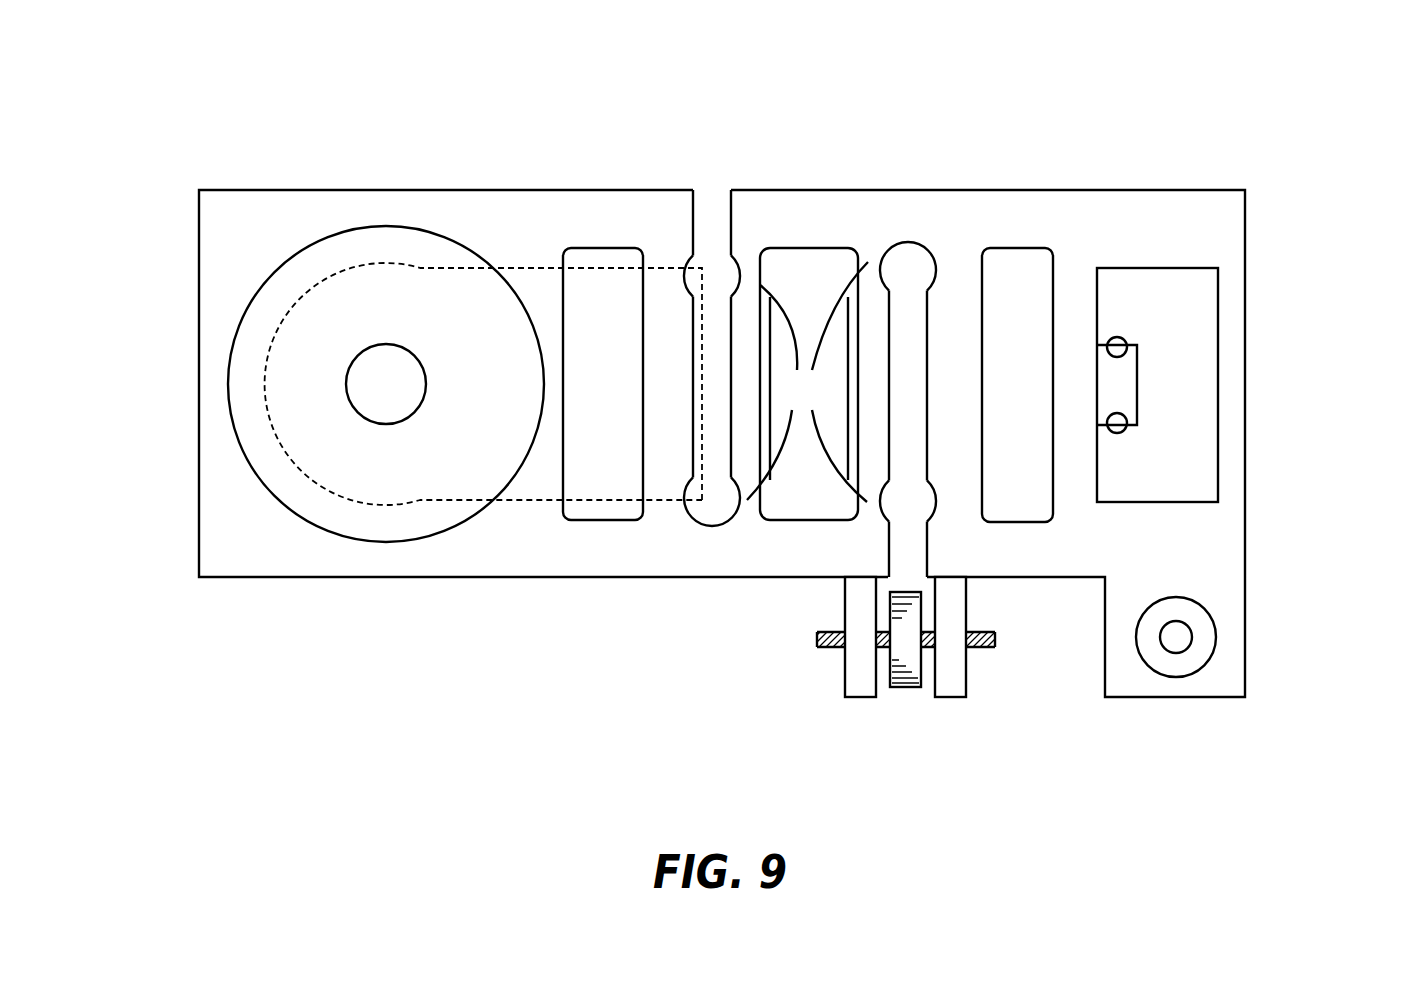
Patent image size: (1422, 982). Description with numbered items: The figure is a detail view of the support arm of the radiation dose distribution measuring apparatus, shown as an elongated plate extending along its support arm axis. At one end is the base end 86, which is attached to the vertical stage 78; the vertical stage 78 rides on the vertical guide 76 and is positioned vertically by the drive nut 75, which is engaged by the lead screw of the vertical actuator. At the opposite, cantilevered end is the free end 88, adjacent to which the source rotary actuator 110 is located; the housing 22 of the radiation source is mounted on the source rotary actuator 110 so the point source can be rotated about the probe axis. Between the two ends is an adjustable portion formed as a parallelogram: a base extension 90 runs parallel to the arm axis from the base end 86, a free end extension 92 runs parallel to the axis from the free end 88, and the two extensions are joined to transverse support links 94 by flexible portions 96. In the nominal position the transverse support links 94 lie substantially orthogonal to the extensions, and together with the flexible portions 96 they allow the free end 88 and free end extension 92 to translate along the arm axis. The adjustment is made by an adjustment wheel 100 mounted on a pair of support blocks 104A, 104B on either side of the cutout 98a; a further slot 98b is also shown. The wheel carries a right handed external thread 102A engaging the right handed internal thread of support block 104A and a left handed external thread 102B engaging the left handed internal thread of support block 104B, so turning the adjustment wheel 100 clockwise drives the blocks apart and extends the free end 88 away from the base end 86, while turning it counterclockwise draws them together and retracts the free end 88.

The housing 22 is at (525, 272).
The drive nut 75 is at (1207, 632).
The vertical guide 76 is at (1115, 393).
The vertical stage 78 is at (1190, 375).
The base end 86 is at (1283, 212).
The free end 88 is at (183, 266).
The base extension 90 is at (813, 228).
The free end extension 92 is at (793, 538).
The transverse support links 94 is at (749, 337).
The flexible portions 96 is at (807, 382).
The cutout 98a is at (907, 402).
The guide slot 98b is at (712, 445).
The adjustment wheel 100 is at (903, 648).
The right handed external thread 102A is at (987, 648).
The left handed external thread 102B is at (825, 648).
The support block 104A is at (952, 668).
The support block 104B is at (866, 686).
The source rotary actuator 110 is at (309, 500).